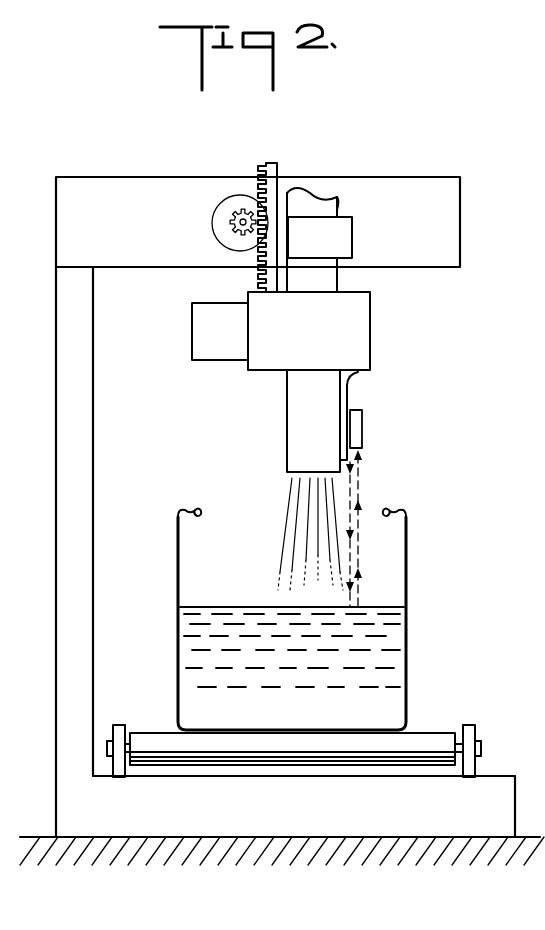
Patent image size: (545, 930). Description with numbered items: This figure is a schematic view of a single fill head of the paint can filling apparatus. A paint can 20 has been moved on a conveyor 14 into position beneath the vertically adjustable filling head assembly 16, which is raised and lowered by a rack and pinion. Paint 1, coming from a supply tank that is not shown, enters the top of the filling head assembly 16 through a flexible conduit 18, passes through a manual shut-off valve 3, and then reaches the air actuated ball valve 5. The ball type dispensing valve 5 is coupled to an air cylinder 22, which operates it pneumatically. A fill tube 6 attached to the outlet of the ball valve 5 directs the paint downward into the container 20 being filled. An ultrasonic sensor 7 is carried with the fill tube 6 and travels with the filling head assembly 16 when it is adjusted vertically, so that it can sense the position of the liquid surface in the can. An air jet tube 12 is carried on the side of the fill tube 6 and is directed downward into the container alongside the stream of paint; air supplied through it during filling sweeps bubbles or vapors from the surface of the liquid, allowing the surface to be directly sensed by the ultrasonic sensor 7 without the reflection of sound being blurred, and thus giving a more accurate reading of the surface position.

The paint 1 is at (320, 190).
The manual shut-off valve 3 is at (329, 249).
The ball valve 5 is at (329, 341).
The fill tube 6 is at (297, 395).
The ultrasonic sensor 7 is at (364, 425).
The air jet tube 12 is at (350, 396).
The conveyor 14 is at (488, 737).
The filling head assembly 16 is at (400, 366).
The flexible conduit 18 is at (340, 207).
The paint can 20 is at (407, 592).
The air cylinder 22 is at (208, 348).